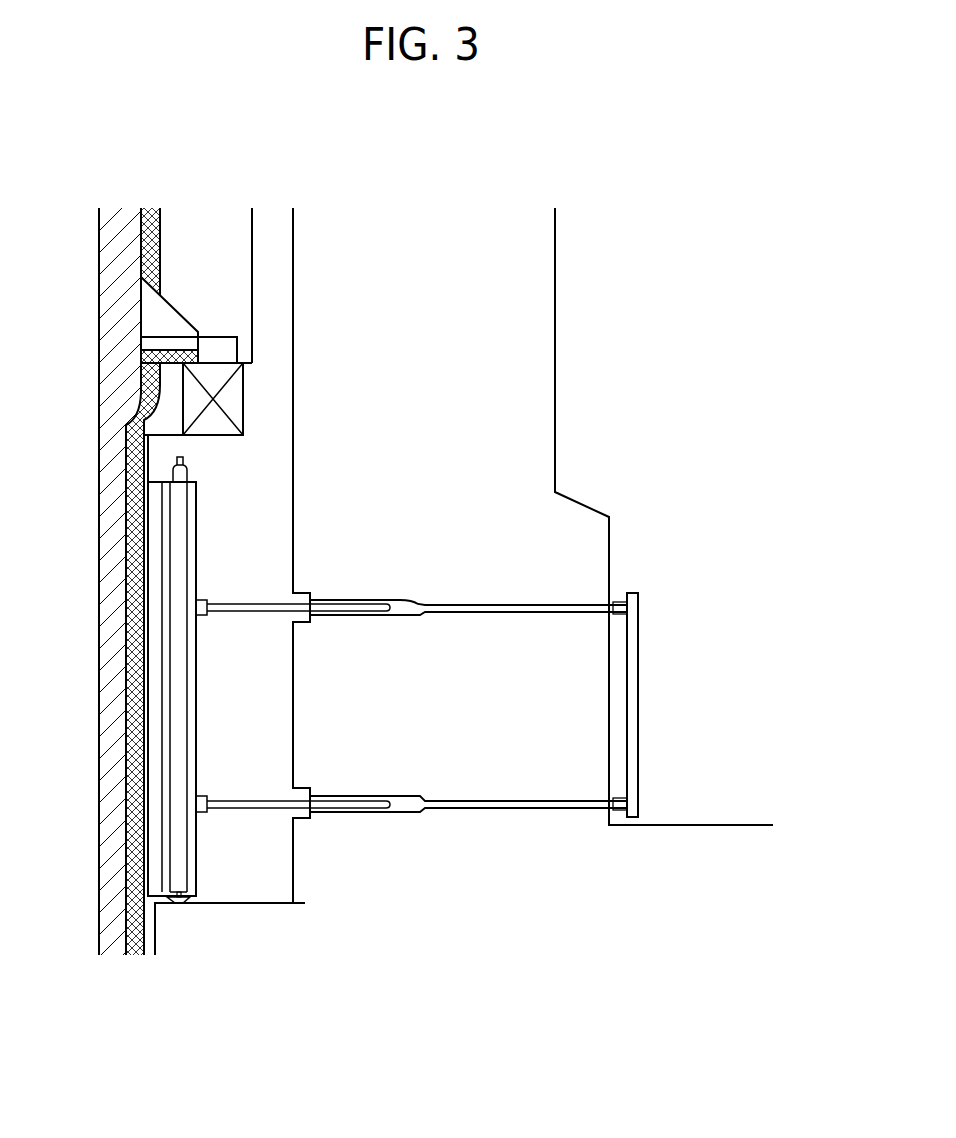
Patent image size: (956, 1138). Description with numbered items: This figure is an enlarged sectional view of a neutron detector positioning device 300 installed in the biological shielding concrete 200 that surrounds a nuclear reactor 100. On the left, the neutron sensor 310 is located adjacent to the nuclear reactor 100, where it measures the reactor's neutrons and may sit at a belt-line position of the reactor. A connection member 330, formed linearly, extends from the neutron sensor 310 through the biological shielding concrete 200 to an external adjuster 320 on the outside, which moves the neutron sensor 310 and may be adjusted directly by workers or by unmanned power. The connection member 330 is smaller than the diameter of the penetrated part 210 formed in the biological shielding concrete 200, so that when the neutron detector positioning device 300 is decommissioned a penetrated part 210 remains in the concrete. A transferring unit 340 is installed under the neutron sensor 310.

The nuclear reactor 100 is at (152, 248).
The biological shielding concrete 200 is at (537, 334).
The penetrated part 210 is at (423, 603).
The neutron detector positioning device 300 is at (587, 1004).
The neutron sensor 310 is at (180, 860).
The external adjuster 320 is at (632, 738).
The connection member 330 is at (402, 805).
The transferring unit 340 is at (183, 905).